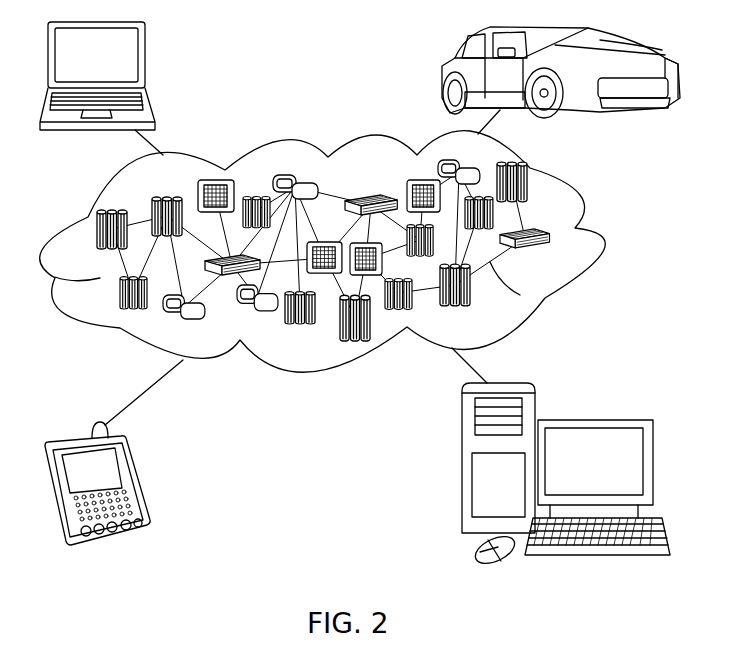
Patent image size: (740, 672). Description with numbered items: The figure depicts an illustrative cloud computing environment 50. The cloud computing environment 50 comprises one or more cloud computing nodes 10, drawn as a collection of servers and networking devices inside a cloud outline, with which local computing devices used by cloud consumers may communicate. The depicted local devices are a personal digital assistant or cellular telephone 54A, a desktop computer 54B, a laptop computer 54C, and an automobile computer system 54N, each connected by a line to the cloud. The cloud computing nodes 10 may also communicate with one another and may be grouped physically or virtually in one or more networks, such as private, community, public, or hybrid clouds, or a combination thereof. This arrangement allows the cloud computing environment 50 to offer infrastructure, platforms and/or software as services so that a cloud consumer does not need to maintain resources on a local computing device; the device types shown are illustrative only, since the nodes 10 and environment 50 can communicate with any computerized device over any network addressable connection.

The cloud computing nodes 10 is at (555, 257).
The cloud computing environment 50 is at (598, 237).
The personal digital assistant (PDA) or cellular telephone 54A is at (138, 485).
The desktop computer 54B is at (588, 420).
The laptop computer 54C is at (145, 63).
The automobile computer system 54N is at (448, 77).